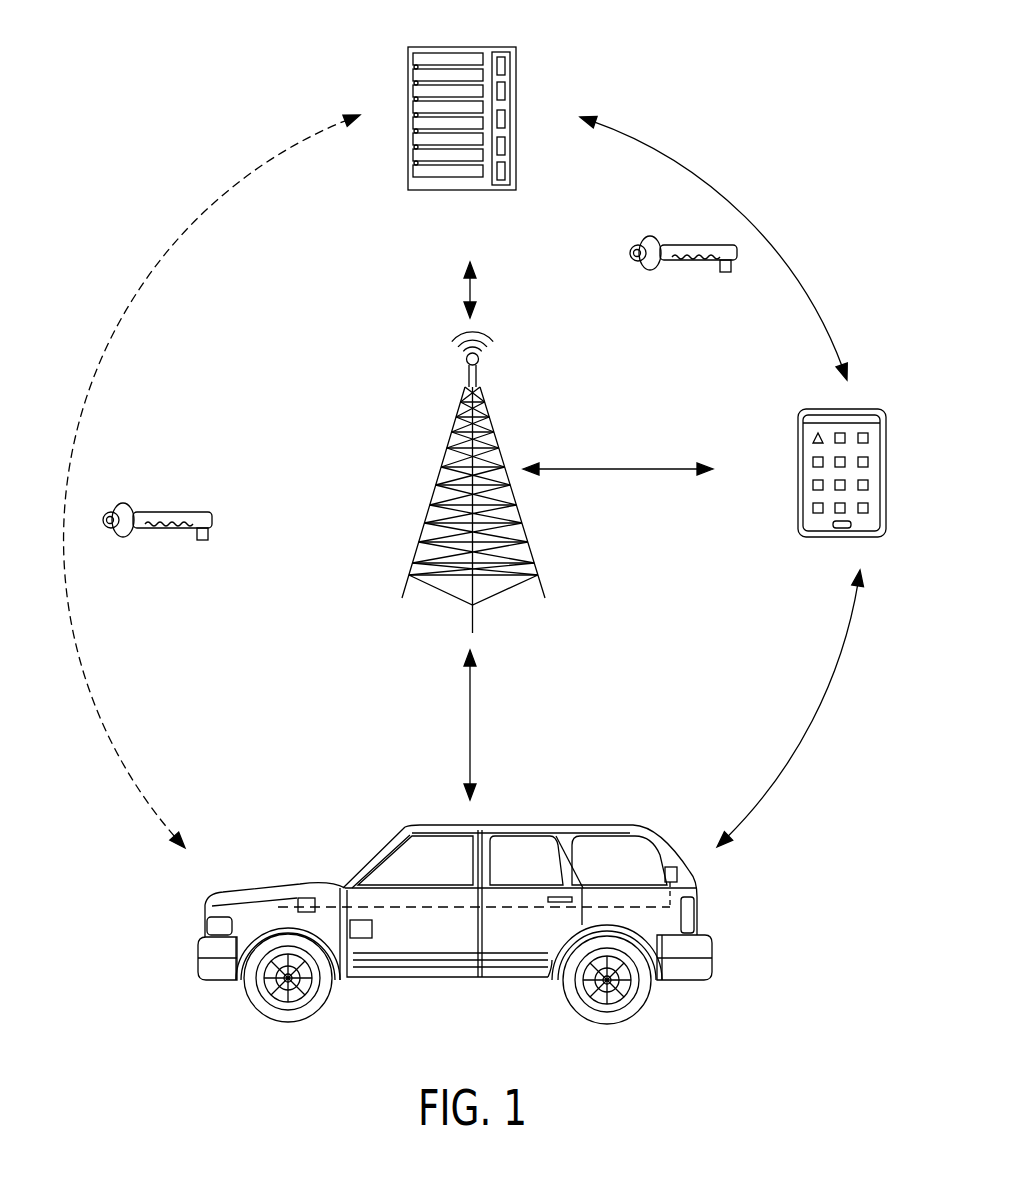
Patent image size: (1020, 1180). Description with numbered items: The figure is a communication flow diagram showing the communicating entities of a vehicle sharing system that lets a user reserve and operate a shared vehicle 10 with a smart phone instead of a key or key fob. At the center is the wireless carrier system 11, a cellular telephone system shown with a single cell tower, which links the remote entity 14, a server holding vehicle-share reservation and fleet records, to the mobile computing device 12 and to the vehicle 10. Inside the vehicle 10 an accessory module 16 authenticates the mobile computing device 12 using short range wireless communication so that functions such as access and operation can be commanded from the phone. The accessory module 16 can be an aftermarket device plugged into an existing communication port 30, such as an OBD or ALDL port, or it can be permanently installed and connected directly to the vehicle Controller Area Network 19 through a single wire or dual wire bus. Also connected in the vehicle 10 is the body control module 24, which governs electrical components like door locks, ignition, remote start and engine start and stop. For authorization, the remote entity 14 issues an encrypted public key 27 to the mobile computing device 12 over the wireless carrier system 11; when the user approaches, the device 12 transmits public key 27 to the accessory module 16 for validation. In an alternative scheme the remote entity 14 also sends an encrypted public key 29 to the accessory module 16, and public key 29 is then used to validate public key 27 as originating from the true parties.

The vehicle 10 is at (455, 978).
The wireless carrier system 11 is at (430, 462).
The mobile computing device 12 is at (798, 497).
The remote entity 14 is at (455, 190).
The accessory module 16 is at (682, 880).
The vehicle Controller Area Network (CAN) 19 is at (410, 913).
The body control module (BCM) 24 is at (300, 898).
The encrypted public key 27 is at (705, 268).
The encrypted public key 29 is at (165, 506).
The communication port 30 is at (360, 938).